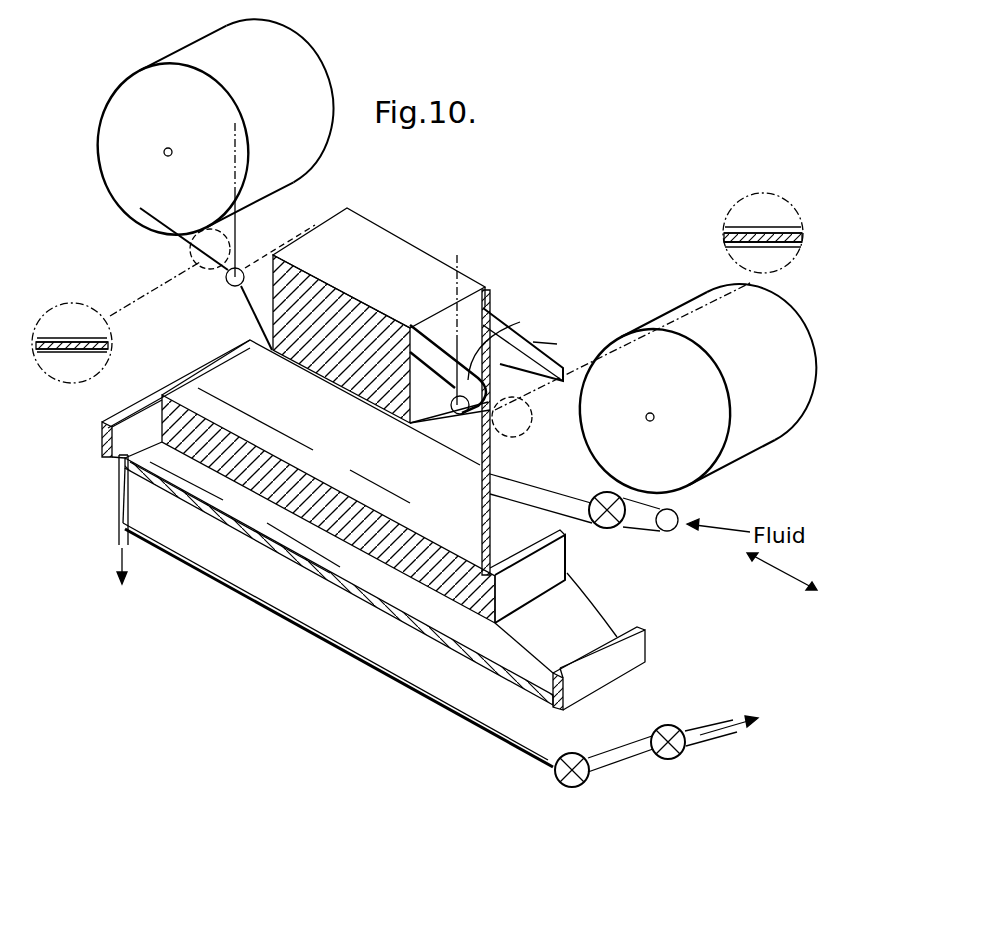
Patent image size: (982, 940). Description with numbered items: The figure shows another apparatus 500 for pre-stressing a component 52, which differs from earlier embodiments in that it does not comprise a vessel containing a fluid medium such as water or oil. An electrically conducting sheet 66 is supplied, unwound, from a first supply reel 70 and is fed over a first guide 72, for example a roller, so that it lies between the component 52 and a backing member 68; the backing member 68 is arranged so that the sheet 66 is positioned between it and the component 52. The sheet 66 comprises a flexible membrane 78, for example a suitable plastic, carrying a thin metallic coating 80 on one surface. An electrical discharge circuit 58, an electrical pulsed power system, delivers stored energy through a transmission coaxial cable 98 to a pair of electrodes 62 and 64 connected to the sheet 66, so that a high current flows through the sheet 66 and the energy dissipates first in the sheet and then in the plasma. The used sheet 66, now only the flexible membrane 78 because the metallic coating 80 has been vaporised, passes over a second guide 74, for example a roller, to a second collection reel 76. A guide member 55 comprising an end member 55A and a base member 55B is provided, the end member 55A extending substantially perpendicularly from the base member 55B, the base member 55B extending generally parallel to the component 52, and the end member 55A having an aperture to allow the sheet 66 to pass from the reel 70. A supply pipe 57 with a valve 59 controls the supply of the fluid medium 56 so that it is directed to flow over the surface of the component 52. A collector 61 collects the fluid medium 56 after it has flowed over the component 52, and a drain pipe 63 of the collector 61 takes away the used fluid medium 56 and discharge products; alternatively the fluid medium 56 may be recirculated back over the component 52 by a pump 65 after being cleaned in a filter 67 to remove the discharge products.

The apparatus 500 is at (722, 627).
The component 52 is at (547, 568).
The guide member 55 is at (550, 347).
The end member 55A is at (491, 522).
The base member 55B is at (473, 363).
The fluid medium 56 is at (500, 673).
The supply pipe 57 is at (658, 498).
The electrical discharge circuit 58 is at (565, 271).
The valve 59 is at (607, 530).
The collector 61 is at (341, 587).
The electrode 62 is at (458, 398).
The drain pipe 63 is at (118, 500).
The electrode 64 is at (246, 267).
The pump 65 is at (667, 726).
The electrically conducting sheet 66 is at (197, 263).
The filter 67 is at (571, 755).
The backing member 68 is at (338, 306).
The first supply reel 70 is at (712, 404).
The first guide 72 is at (457, 410).
The second guide 74 is at (200, 253).
The second collection reel 76 is at (143, 90).
The flexible membrane 78 is at (55, 340).
The metallic coating 80 is at (790, 236).
The transmission coaxial cable 98 is at (235, 152).